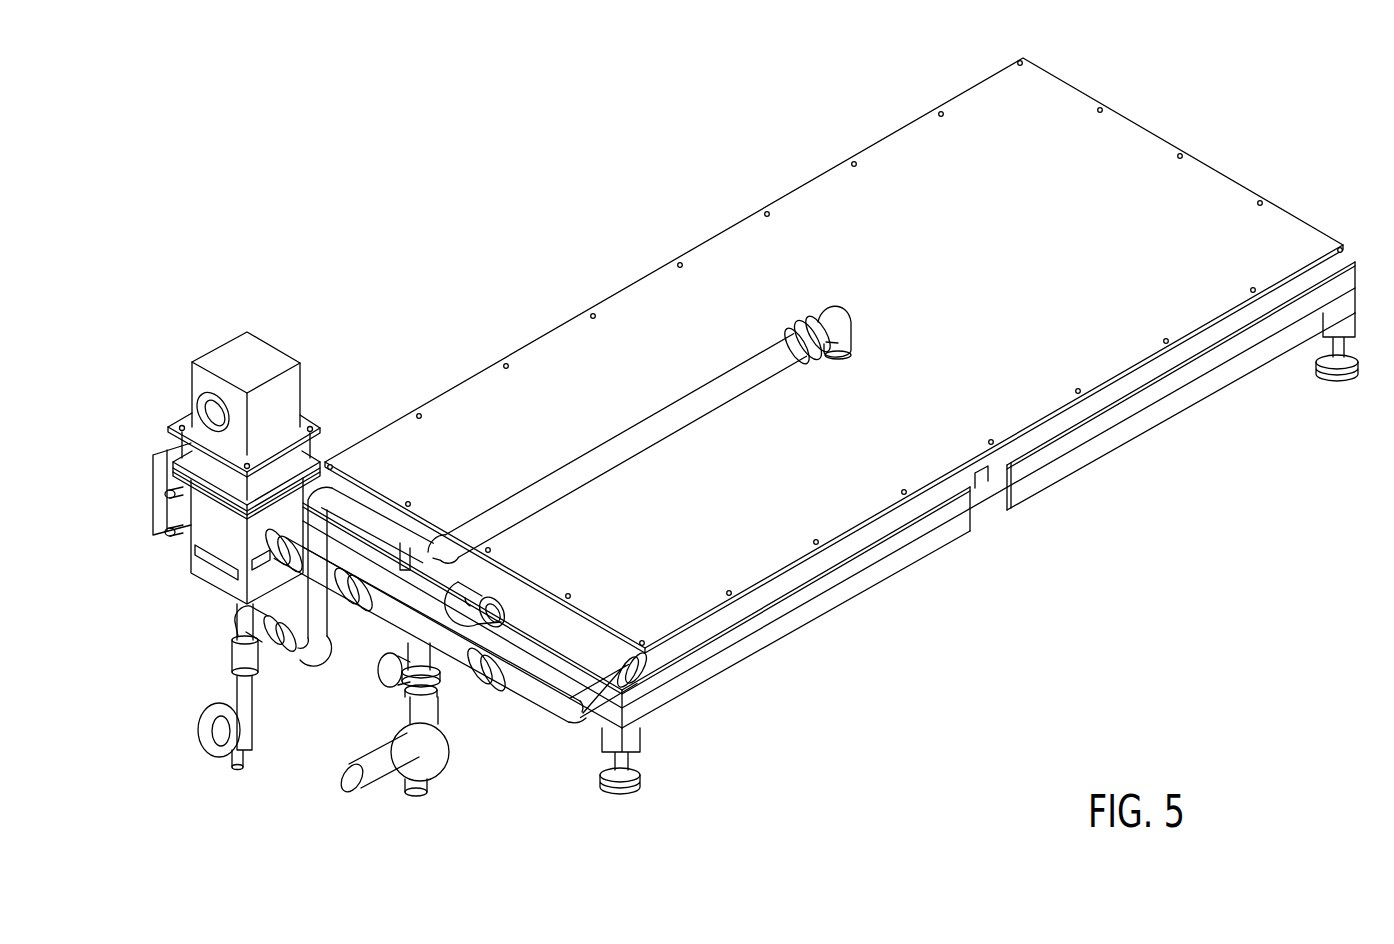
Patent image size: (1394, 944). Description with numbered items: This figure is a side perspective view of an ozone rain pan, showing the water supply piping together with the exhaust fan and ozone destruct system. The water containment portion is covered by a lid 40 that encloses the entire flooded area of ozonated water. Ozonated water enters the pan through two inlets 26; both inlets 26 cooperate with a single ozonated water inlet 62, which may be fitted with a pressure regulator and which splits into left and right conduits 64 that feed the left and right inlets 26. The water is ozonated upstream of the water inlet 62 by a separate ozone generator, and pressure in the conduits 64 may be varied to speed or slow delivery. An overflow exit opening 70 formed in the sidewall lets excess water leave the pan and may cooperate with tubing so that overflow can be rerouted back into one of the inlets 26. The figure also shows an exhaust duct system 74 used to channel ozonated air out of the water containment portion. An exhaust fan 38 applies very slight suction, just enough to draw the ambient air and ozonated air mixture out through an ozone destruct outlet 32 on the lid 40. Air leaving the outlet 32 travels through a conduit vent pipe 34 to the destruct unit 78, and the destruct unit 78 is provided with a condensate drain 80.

The inlet 26 is at (352, 517).
The ozone destruct outlet 32 is at (833, 350).
The conduit vent pipe 34 is at (623, 443).
The exhaust fan 38 is at (208, 467).
The lid 40 is at (973, 152).
The ozonated water inlet 62 is at (370, 782).
The conduit 64 is at (372, 606).
The overflow exit opening 70 is at (483, 590).
The exhaust duct system 74 is at (328, 325).
The destruct unit 78 is at (223, 540).
The condensate drain 80 is at (212, 750).